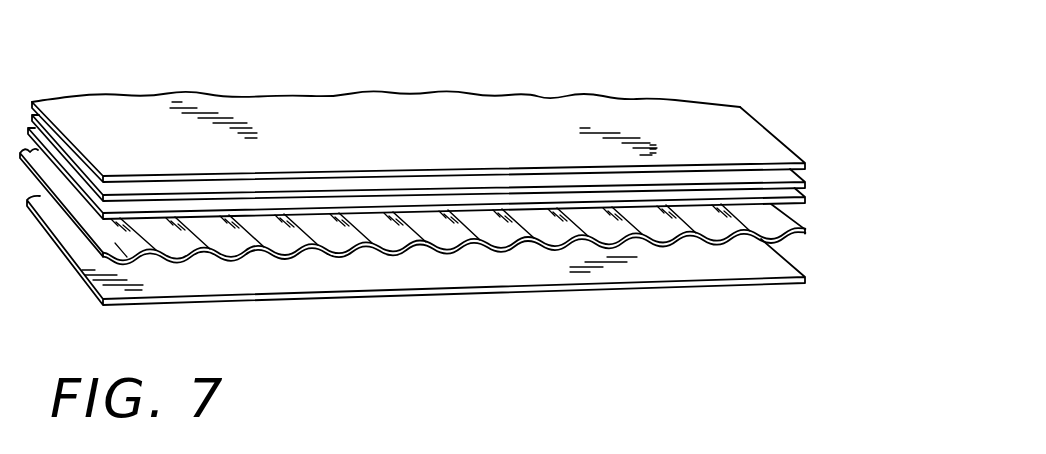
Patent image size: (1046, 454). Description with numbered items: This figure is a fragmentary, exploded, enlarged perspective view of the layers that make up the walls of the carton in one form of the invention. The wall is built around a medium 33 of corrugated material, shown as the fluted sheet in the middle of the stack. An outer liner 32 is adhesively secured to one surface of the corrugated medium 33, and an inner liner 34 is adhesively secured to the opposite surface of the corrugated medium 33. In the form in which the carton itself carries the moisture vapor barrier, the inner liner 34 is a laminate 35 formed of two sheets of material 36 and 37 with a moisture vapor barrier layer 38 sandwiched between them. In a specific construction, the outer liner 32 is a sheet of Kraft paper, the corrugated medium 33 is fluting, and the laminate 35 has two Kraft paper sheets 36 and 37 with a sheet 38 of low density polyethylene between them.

The outer liner 32 is at (383, 297).
The medium of corrugated material 33 is at (98, 240).
The inner liner 34 is at (797, 201).
The laminate 35 is at (453, 191).
The sheet of material 36 is at (668, 120).
The sheet of material 37 is at (700, 199).
The moisture vapor barrier layer 38 is at (715, 181).